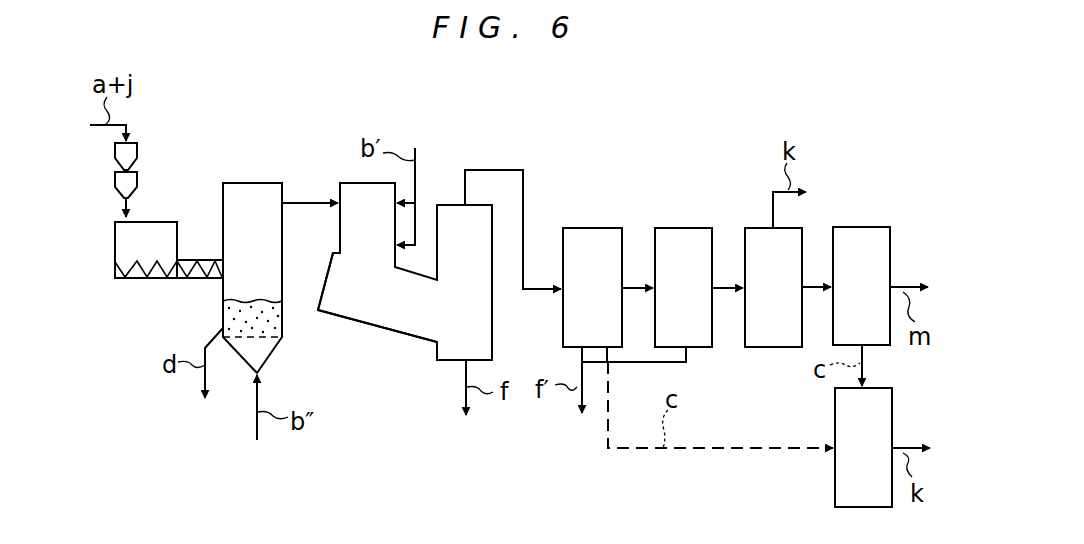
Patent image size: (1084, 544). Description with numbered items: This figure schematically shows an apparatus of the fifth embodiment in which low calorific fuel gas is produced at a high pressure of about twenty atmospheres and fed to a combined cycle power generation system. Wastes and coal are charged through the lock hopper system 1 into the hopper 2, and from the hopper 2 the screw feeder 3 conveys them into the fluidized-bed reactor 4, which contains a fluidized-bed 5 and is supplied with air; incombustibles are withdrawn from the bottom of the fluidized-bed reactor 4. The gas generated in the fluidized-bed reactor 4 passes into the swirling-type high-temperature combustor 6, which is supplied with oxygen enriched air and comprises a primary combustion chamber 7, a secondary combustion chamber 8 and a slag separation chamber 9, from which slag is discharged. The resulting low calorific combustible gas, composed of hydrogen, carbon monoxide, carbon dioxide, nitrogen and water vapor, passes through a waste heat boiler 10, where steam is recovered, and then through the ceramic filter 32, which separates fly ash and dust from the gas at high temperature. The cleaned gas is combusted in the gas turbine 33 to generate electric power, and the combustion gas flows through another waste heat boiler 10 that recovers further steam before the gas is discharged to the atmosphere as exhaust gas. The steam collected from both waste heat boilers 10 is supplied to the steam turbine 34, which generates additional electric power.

The lock hopper system 1 is at (138, 167).
The hopper 2 is at (157, 220).
The screw feeder 3 is at (177, 281).
The fluidized-bed reactor 4 is at (270, 183).
The fluidized-bed 5 is at (277, 315).
The swirling-type high-temperature combustor 6 is at (368, 325).
The primary combustion chamber 7 is at (358, 220).
The secondary combustion chamber 8 is at (405, 307).
The slag separation chamber 9 is at (473, 287).
The waste heat boiler 10 is at (592, 227).
The ceramic filter 32 is at (683, 227).
The gas turbine 33 is at (762, 348).
The steam turbine 34 is at (835, 417).